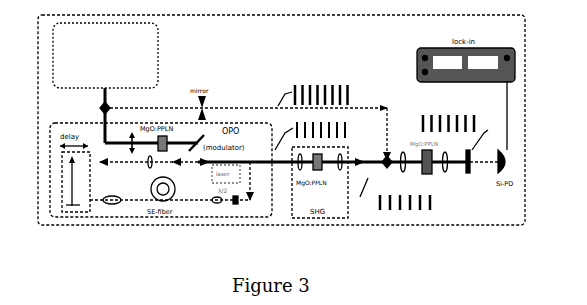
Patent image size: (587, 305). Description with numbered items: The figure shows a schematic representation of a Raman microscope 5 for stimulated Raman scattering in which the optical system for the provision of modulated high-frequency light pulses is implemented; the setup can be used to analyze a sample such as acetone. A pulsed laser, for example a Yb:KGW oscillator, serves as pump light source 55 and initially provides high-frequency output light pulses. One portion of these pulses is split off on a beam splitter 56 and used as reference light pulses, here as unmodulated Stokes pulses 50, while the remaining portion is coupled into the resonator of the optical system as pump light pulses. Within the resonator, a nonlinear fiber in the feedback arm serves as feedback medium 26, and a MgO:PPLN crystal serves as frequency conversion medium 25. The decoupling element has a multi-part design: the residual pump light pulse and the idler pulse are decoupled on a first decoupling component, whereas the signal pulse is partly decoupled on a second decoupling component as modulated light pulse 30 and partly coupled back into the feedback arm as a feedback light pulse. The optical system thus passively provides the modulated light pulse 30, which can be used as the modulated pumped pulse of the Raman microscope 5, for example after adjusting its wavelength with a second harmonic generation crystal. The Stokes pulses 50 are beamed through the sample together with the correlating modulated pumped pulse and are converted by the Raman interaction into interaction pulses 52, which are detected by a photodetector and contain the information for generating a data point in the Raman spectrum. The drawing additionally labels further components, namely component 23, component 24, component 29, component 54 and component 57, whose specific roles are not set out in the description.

The Raman microscope 5 is at (281, 120).
The dichroic mirror 23 is at (197, 138).
The waveplate 24 is at (130, 139).
The frequency conversion medium 25 is at (152, 165).
The feedback medium 26 is at (176, 187).
The optical parametric oscillator module 29 is at (109, 225).
The modulated light pulse 30 is at (349, 135).
The Stokes pulse 50 is at (350, 87).
The interaction pulse 52 is at (450, 113).
The beam splitter 54 is at (100, 108).
The pump light source 55 is at (158, 42).
The beam splitter 56 is at (434, 203).
The filter 57 is at (467, 167).